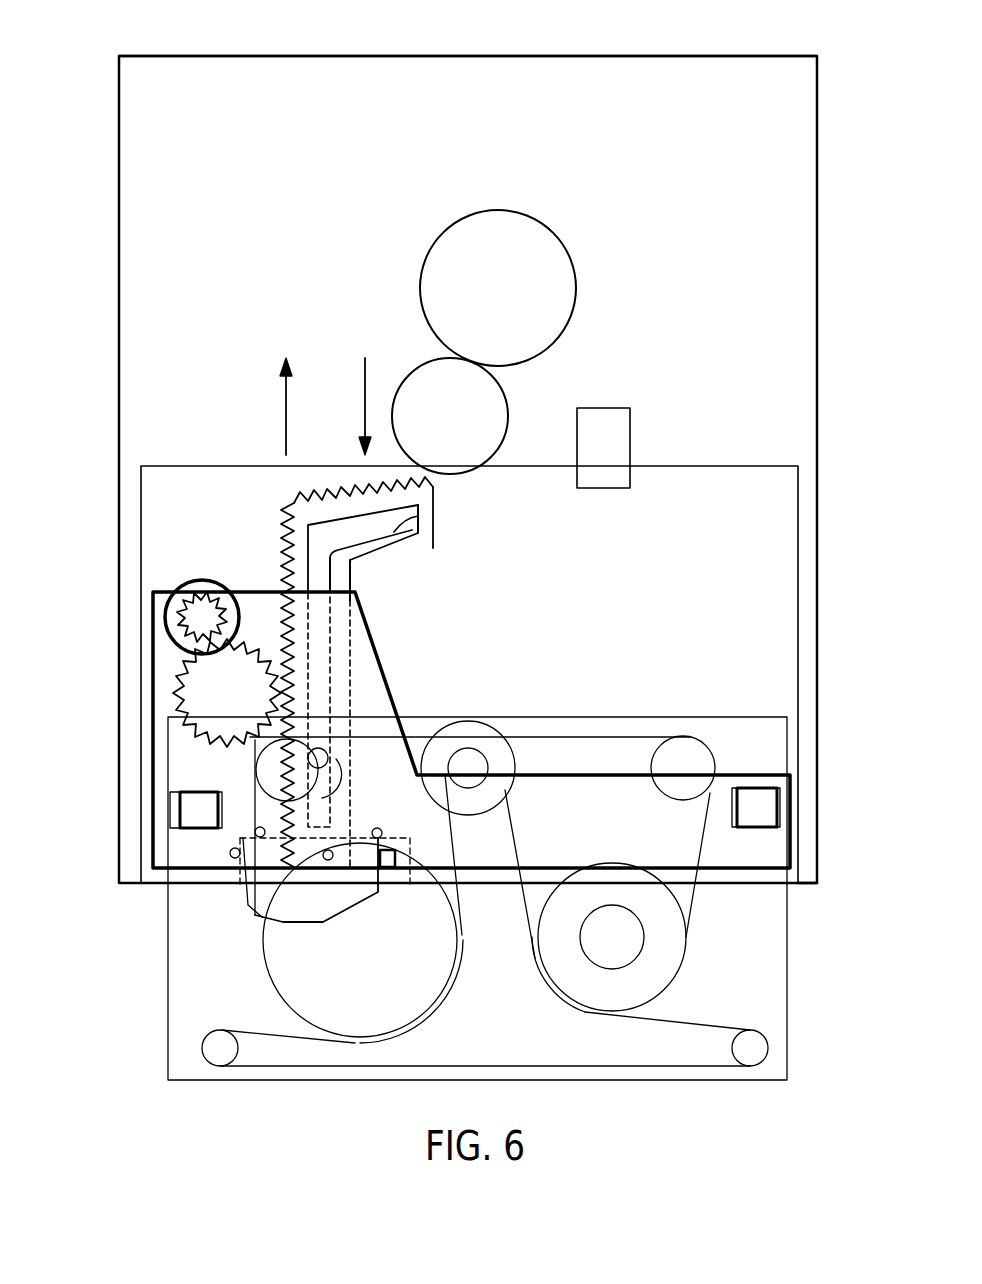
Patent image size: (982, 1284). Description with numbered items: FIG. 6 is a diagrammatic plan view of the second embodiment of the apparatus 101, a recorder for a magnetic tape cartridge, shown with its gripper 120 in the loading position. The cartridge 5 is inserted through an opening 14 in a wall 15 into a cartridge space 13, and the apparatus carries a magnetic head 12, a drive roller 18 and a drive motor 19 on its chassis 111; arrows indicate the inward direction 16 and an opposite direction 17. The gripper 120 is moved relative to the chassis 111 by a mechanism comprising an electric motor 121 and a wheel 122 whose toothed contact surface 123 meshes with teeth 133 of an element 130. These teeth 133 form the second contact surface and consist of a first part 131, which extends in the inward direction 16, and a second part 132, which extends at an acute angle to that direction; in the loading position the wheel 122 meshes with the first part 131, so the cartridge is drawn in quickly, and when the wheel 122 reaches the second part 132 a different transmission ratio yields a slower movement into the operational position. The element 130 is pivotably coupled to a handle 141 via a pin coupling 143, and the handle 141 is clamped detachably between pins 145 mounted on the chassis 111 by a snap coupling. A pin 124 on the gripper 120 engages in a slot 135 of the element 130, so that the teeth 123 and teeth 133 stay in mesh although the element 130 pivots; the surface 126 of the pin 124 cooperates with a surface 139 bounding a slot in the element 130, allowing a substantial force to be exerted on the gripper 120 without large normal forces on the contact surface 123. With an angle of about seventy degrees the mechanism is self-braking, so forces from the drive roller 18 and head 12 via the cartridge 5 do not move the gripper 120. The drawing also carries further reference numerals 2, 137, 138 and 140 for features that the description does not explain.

The apparatus 101 is at (108, 353).
The chassis 111 is at (322, 83).
The cartridge space 13 is at (627, 616).
The opening 14 is at (712, 885).
The wall 15 is at (808, 885).
The drive motor 19 is at (578, 290).
The drive roller 18 is at (509, 418).
The magnetic head 12 is at (631, 415).
The inward direction 16 is at (285, 402).
The downward direction arrow 17 is at (364, 382).
The carriage plate 2 is at (592, 737).
The cartridge 5 is at (712, 1082).
The gripper 120 is at (375, 628).
The slot 135 is at (320, 655).
The element 130 is at (400, 545).
The surface 139 is at (420, 514).
The bracket stem 137 is at (352, 568).
The bracket inner wall 138 is at (333, 580).
The teeth 133 is at (290, 500).
The second part 132 is at (378, 481).
The first part 131 is at (287, 550).
The electric motor 121 is at (188, 590).
The contact surface 123 is at (265, 648).
The wheel 122 is at (205, 687).
The surface 126 is at (340, 795).
The pin 124 is at (328, 757).
The mounting unit 140 is at (235, 908).
The handle 141 is at (290, 922).
The pin coupling 143 is at (330, 862).
The pins 145 is at (392, 860).